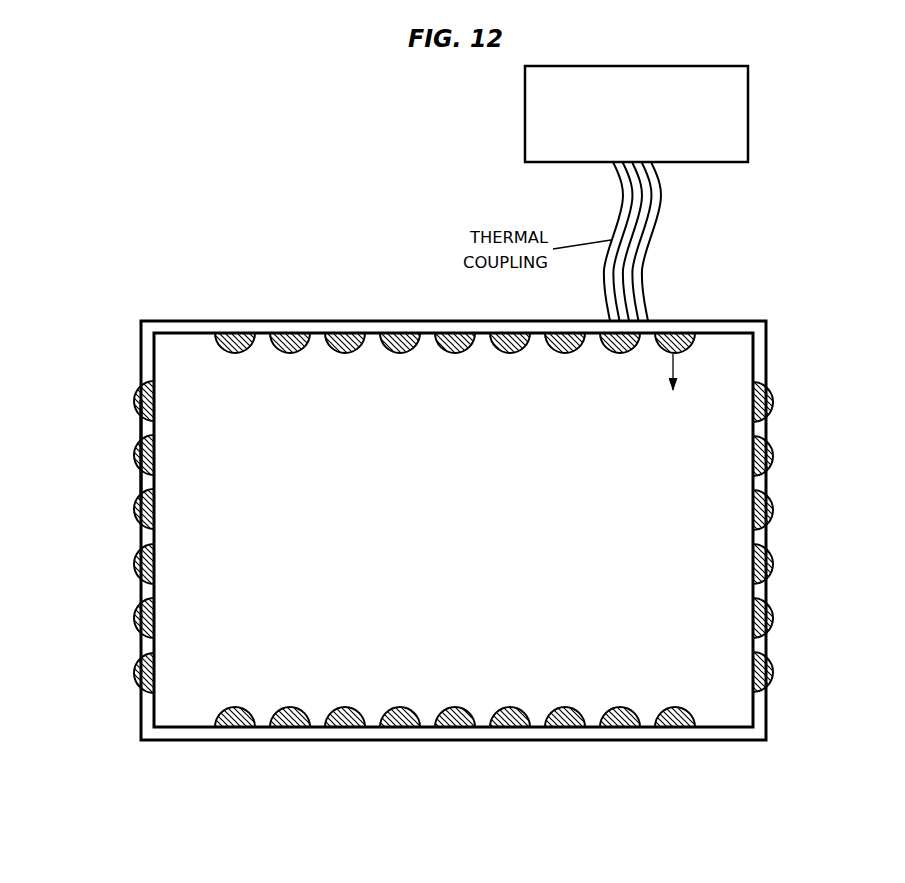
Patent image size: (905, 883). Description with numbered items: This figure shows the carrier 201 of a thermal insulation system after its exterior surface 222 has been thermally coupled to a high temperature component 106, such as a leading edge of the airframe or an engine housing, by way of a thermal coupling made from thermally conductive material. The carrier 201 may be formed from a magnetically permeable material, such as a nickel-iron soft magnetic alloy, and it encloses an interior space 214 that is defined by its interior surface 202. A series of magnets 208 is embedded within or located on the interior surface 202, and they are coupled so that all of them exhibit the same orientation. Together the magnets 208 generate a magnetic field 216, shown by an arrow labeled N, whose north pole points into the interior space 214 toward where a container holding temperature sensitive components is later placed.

The high temperature component 106 is at (621, 149).
The carrier 201 is at (757, 321).
The interior surface 202 is at (720, 723).
The magnets 208 is at (691, 351).
The interior space 214 is at (194, 370).
The magnetic field 216 is at (671, 365).
The exterior surface 222 is at (140, 445).